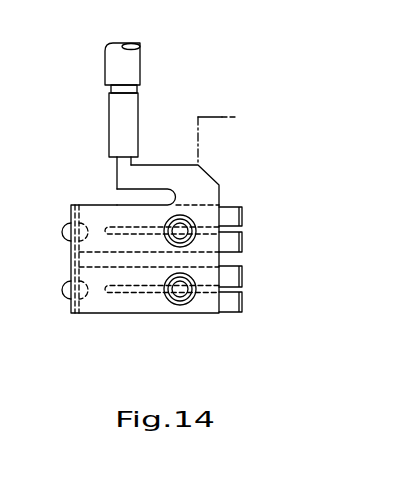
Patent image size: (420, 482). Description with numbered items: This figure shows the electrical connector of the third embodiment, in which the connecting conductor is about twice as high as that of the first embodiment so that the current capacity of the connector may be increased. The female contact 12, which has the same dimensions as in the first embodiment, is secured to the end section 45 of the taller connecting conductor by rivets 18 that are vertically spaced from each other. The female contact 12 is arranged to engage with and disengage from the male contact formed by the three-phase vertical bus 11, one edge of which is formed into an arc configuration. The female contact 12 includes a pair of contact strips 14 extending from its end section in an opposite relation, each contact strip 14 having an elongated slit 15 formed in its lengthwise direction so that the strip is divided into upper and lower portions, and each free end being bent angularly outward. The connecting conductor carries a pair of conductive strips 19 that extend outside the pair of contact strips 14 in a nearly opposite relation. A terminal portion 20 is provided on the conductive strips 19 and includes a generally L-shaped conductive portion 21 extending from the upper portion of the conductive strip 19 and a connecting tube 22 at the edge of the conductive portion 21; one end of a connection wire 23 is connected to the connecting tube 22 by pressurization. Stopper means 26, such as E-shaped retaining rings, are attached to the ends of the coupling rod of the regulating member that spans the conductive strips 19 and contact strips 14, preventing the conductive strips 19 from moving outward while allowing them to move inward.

The vertical bus 11 is at (238, 116).
The female contact 12 is at (254, 233).
The contact strip 14 is at (91, 247).
The elongated slit 15 is at (128, 232).
The rivet 18 is at (63, 232).
The conductive strip 19 is at (93, 313).
The terminal portion 20 is at (158, 150).
The conductive portion 21 is at (180, 187).
The connecting tube 22 is at (117, 119).
The connection wire 23 is at (112, 63).
The stopper means 26 is at (195, 224).
The end section 45 is at (71, 258).